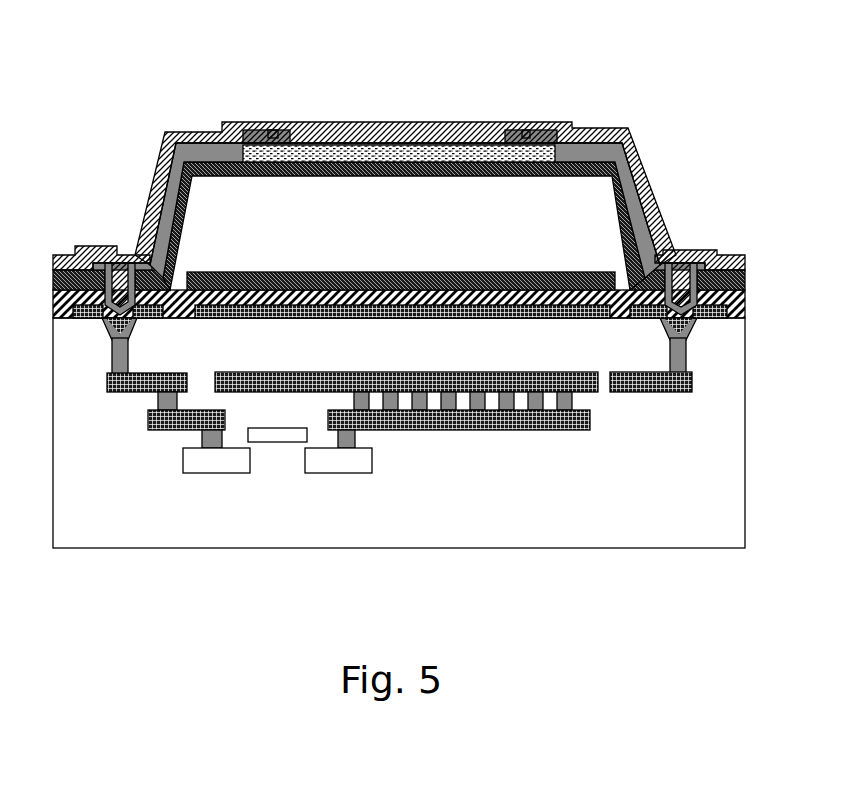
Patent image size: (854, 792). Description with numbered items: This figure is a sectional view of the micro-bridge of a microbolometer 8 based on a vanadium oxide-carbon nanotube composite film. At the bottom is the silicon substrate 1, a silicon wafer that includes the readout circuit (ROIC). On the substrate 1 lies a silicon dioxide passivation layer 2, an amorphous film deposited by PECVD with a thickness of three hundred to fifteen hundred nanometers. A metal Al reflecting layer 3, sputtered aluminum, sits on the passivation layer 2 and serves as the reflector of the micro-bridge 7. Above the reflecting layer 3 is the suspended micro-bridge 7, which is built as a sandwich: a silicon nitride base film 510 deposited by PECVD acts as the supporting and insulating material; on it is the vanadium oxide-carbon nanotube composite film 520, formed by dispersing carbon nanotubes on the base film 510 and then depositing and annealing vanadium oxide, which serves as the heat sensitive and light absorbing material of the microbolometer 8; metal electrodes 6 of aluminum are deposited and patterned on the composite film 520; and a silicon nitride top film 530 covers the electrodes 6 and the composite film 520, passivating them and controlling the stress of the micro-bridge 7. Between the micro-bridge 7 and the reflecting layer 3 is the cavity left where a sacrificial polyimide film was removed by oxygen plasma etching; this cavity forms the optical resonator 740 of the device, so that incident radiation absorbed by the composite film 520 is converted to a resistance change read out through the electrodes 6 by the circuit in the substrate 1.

The silicon substrate 1 is at (695, 449).
The silicon dioxide passivation layer 2 is at (627, 290).
The metal Al reflecting layer 3 is at (608, 256).
The metal electrode 6 is at (145, 212).
The suspended micro-bridge 7 is at (391, 176).
The microbolometer 8 is at (391, 163).
The silicon nitride base film 510 is at (148, 267).
The vanadium oxide-carbon nanotube composite film 520 is at (537, 140).
The silicon nitride top film 530 is at (147, 173).
The optical resonator 740 is at (455, 198).